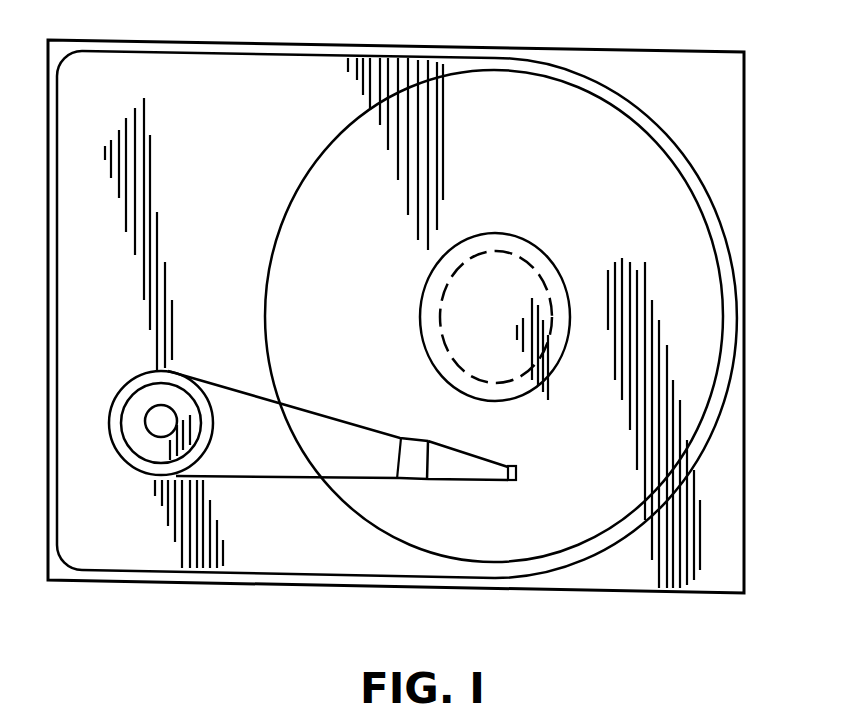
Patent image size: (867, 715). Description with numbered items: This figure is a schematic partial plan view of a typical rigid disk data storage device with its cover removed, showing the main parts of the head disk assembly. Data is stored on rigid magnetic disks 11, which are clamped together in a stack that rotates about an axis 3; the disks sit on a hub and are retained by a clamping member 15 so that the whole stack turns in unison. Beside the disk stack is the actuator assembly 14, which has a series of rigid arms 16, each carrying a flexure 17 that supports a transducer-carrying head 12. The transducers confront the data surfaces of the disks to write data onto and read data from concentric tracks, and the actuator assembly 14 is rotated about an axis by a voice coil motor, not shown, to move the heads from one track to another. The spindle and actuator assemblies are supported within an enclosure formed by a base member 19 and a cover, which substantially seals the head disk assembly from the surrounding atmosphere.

The axis 3 is at (461, 328).
The rigid disk 11 is at (494, 104).
The head 12 is at (517, 472).
The actuator assembly 14 is at (130, 432).
The clamping member 15 is at (532, 244).
The rigid arm 16 is at (282, 479).
The flexure 17 is at (458, 482).
The base member 19 is at (744, 548).